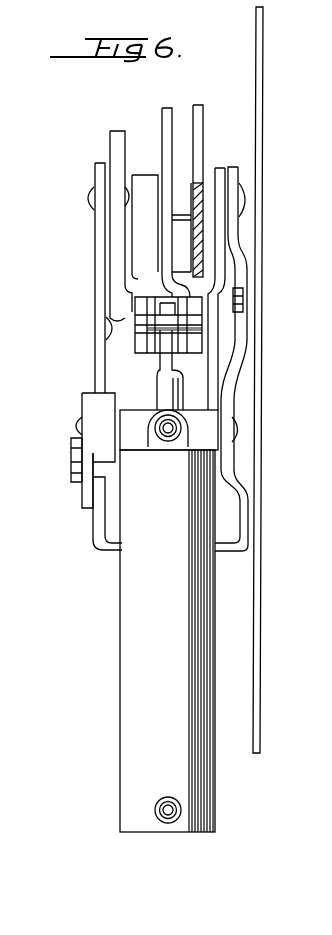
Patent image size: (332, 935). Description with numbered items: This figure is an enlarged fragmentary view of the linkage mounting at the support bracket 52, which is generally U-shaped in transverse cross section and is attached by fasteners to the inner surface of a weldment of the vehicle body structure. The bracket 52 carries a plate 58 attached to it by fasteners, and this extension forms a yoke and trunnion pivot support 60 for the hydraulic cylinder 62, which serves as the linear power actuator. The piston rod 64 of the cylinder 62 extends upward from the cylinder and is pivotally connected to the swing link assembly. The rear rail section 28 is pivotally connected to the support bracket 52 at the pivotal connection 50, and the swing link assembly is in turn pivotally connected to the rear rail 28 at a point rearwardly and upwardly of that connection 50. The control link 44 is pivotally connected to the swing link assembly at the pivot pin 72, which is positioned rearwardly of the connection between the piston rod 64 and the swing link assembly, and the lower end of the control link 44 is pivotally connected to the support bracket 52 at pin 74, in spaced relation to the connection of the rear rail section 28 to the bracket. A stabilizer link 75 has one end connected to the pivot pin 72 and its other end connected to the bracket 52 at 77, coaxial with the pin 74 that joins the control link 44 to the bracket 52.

The rear rail section 28 is at (170, 108).
The control link 44 is at (118, 131).
The pivotal connection 50 is at (190, 197).
The support bracket 52 is at (250, 348).
The plate 58 is at (90, 405).
The trunnion pivot support 60 is at (75, 428).
The hydraulic cylinder 62 is at (166, 591).
The piston rod 64 is at (179, 382).
The pivot pin 72 is at (153, 354).
The pivot pin 74 is at (87, 200).
The stabilizer link 75 is at (220, 168).
The connection to bracket 77 is at (249, 200).